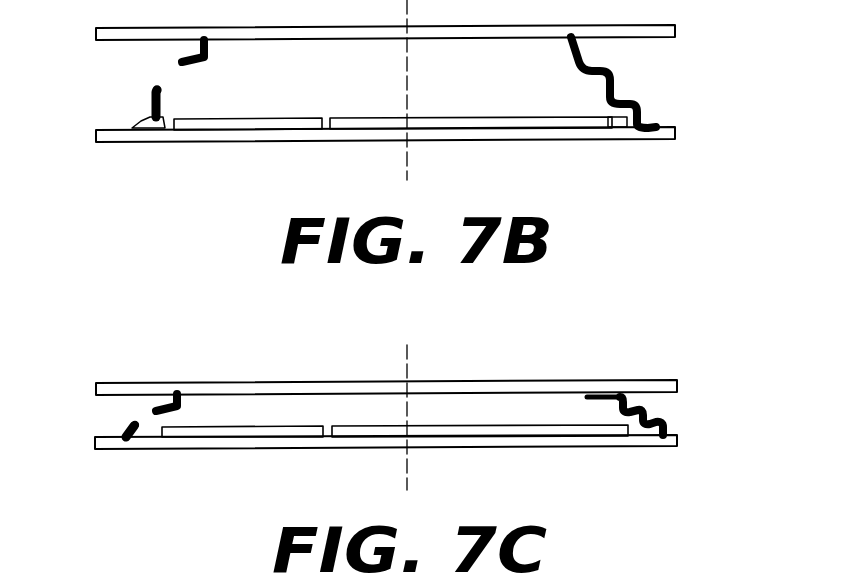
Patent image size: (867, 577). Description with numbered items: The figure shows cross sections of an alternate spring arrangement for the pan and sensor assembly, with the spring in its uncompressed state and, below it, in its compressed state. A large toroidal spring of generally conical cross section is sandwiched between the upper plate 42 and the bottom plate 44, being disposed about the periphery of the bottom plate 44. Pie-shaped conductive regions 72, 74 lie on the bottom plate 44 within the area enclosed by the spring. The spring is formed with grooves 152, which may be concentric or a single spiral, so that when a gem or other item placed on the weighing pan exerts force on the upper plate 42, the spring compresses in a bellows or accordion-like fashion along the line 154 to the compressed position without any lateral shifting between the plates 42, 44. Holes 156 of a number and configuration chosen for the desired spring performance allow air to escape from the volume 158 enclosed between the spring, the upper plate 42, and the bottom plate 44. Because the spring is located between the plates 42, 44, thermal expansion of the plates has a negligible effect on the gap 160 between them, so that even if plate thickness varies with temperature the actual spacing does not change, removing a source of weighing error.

In FIG. 7B, the upper plate 42 is at (675, 31).
In FIG. 7C, the upper plate 42 is at (652, 387).
In FIG. 7B, the bottom plate 44 is at (668, 139).
In FIG. 7C, the bottom plate 44 is at (677, 445).
In FIG. 7B, the conductive region 72 is at (225, 123).
In FIG. 7C, the conductive region 72 is at (233, 432).
In FIG. 7B, the conductive region 74 is at (477, 123).
In FIG. 7C, the conductive region 74 is at (463, 432).
In FIG. 7B, the grooves 152 is at (605, 90).
In FIG. 7C, the grooves 152 is at (655, 401).
In FIG. 7B, the line 154 is at (407, 3).
In FIG. 7B, the holes 156 is at (170, 77).
In FIG. 7C, the holes 156 is at (148, 417).
In FIG. 7B, the volume 158 is at (347, 76).
In FIG. 7C, the volume 158 is at (345, 417).
In FIG. 7B, the gap 160 is at (662, 87).
In FIG. 7C, the gap 160 is at (648, 399).